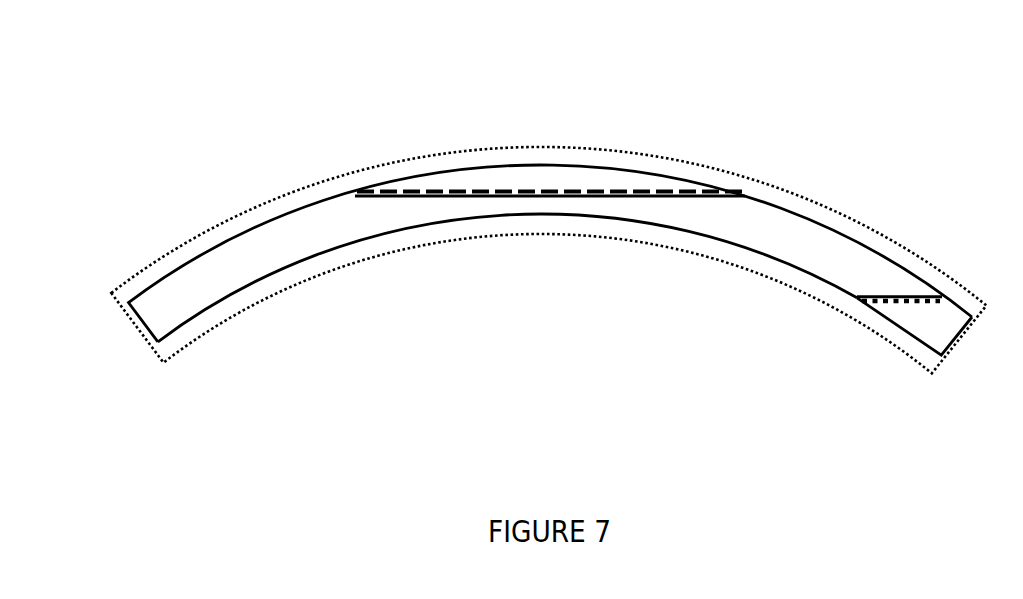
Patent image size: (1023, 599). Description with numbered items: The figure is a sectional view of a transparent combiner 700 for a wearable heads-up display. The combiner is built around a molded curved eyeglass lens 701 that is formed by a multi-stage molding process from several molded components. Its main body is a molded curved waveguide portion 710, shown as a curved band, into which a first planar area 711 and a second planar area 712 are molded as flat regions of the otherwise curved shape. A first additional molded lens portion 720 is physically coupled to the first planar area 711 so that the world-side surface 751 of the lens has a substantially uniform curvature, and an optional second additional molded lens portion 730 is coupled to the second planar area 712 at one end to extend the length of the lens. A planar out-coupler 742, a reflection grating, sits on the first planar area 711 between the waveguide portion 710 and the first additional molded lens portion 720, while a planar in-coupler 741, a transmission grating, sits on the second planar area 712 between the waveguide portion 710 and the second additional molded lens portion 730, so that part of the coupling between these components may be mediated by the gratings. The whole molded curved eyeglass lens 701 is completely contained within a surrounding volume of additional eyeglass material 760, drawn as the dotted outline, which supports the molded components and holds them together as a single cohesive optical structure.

The transparent combiner 700 is at (127, 159).
The molded curved eyeglass lens 701 is at (163, 358).
The molded curved waveguide portion 710 is at (130, 312).
The volume of additional eyeglass material 760 is at (238, 305).
The first additional molded lens portion 720 is at (547, 173).
The planar out-coupler 742 is at (432, 198).
The world-side surface 751 is at (402, 185).
The first planar area 711 is at (633, 193).
The second additional molded lens portion 730 is at (940, 333).
The planar in-coupler 741 is at (858, 300).
The second planar area 712 is at (910, 297).